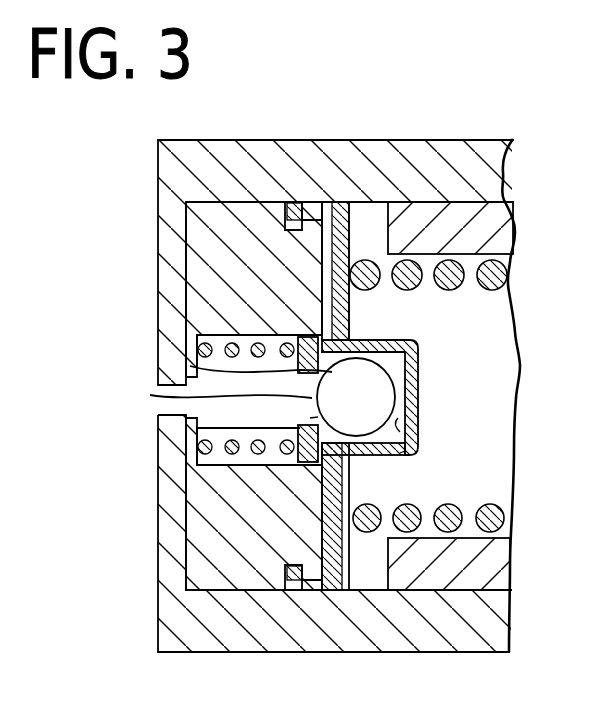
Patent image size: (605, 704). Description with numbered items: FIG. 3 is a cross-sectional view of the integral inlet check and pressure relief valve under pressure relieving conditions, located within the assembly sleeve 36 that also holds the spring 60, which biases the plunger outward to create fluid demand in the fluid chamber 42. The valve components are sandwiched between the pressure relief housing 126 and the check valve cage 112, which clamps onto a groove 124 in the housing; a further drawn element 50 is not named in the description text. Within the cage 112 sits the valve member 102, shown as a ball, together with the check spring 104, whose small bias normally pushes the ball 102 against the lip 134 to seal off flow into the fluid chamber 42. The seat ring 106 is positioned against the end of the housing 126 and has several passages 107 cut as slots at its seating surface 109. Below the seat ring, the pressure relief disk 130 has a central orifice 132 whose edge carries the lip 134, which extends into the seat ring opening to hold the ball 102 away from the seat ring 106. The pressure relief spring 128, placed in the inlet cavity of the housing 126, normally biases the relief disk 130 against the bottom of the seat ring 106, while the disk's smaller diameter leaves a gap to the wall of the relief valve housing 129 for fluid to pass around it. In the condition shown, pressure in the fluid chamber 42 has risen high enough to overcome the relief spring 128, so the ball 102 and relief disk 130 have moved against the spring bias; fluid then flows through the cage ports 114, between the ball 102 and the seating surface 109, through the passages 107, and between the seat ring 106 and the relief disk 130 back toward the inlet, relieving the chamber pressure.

The assembly sleeve 36 is at (477, 628).
The fluid chamber 42 is at (494, 476).
The lower support block 50 is at (492, 560).
The spring 60 is at (497, 517).
The valve member 102 is at (370, 372).
The check spring 104 is at (398, 425).
The seat ring 106 is at (340, 314).
The passages 107 is at (405, 451).
The seating surface 109 is at (198, 364).
The check valve cage 112 is at (413, 400).
The cage ports 114 is at (380, 456).
The groove 124 is at (286, 582).
The pressure relief housing 126 is at (215, 258).
The pressure relief spring 128 is at (196, 362).
The wall of the relief valve housing 129 is at (303, 335).
The pressure relief disk 130 is at (316, 458).
The orifice 132 is at (150, 395).
The lip 134 is at (312, 418).